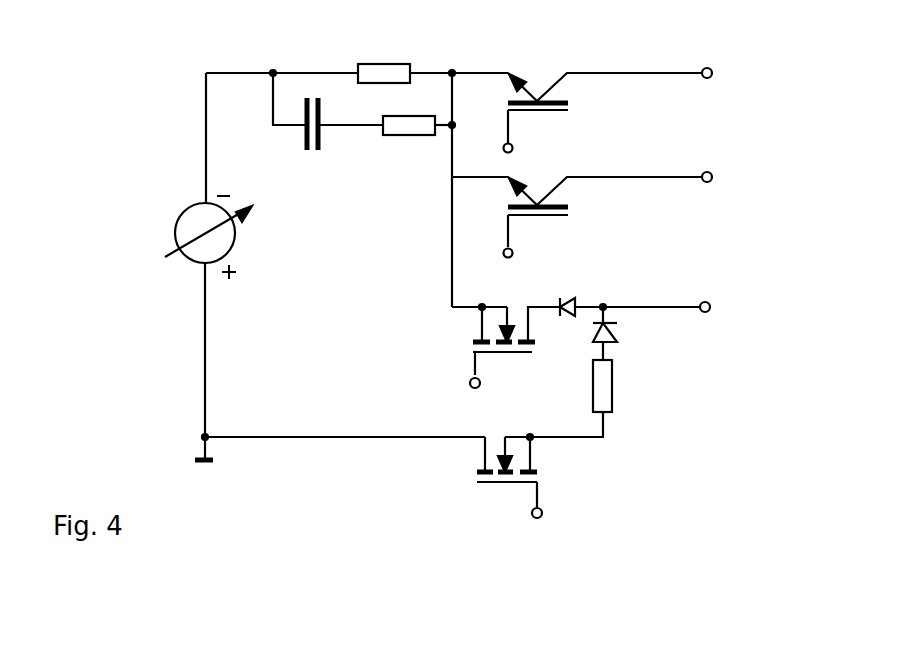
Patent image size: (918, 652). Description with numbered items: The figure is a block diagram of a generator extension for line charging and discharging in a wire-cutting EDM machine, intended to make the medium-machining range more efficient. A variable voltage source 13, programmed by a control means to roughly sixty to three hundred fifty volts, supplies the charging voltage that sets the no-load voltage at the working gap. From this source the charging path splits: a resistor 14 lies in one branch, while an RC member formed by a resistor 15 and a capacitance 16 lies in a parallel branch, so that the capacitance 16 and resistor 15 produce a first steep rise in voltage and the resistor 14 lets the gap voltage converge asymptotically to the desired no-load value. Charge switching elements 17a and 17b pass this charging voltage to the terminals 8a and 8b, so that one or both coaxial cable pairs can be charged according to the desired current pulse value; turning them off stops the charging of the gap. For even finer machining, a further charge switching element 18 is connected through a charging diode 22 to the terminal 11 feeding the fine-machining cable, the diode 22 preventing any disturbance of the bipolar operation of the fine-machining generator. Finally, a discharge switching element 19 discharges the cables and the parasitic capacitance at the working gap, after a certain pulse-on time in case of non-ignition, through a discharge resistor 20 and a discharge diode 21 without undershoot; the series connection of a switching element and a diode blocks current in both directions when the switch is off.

The terminal 8a is at (731, 72).
The terminal 8b is at (731, 177).
The terminal 11 is at (728, 307).
The variable voltage source 13 is at (188, 210).
The resistor 14 is at (383, 64).
The resistor 15 is at (415, 114).
The capacitance 16 is at (317, 100).
The charge switching element 17a is at (515, 72).
The charge switching element 17b is at (566, 180).
The charge switching element 18 is at (473, 352).
The discharge switching element 19 is at (477, 482).
The discharge resistor 20 is at (612, 390).
The discharge diode 21 is at (617, 325).
The charging diode 22 is at (567, 295).